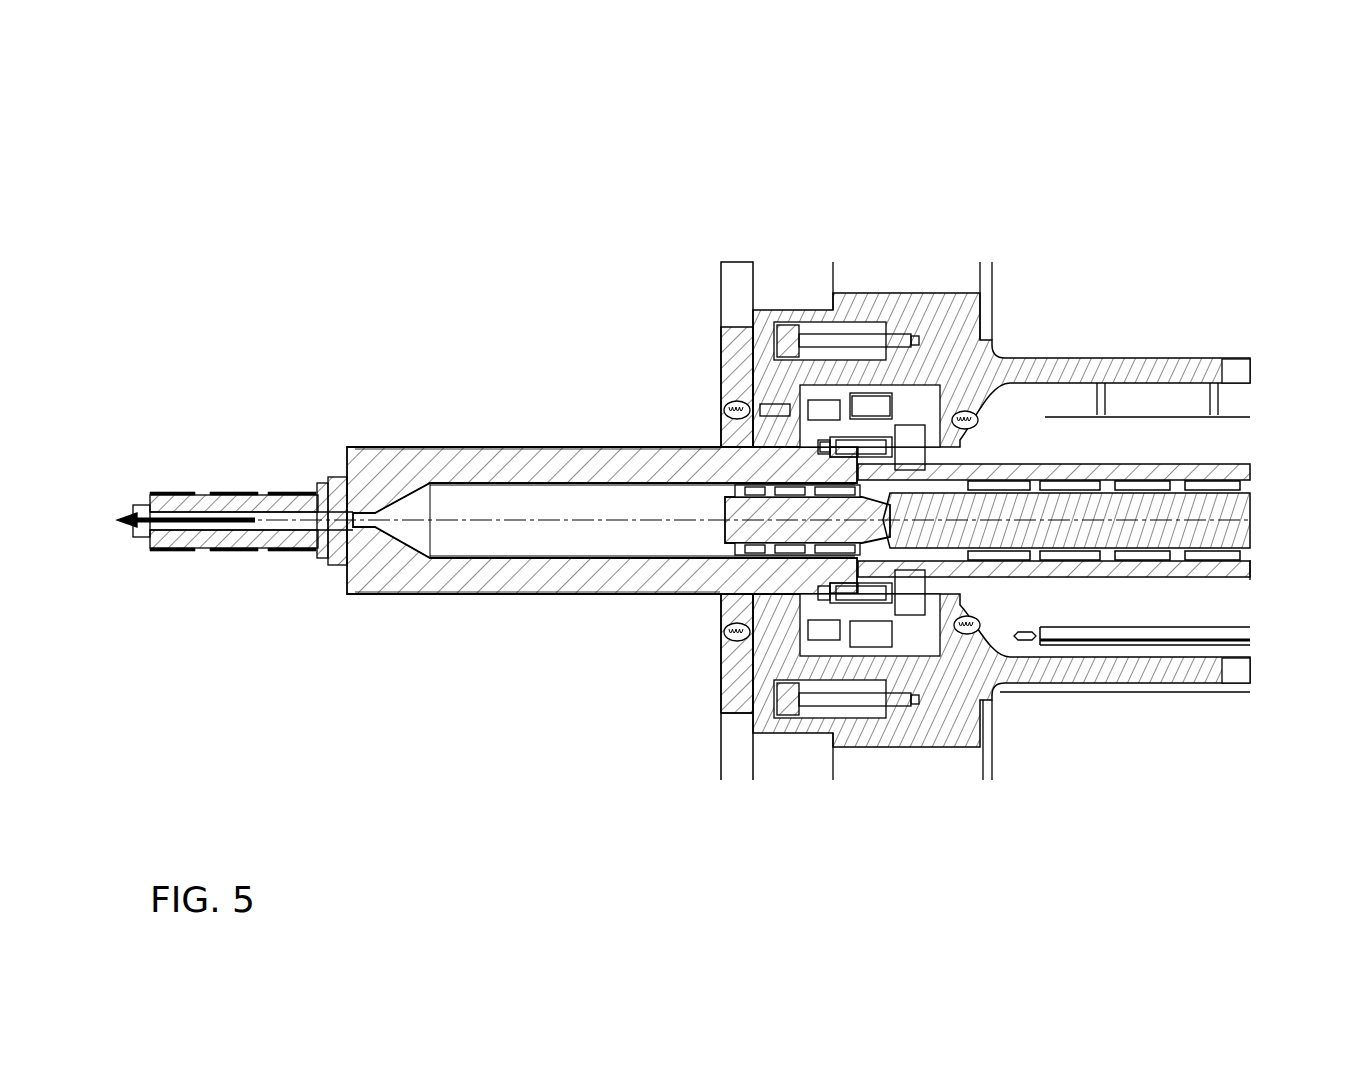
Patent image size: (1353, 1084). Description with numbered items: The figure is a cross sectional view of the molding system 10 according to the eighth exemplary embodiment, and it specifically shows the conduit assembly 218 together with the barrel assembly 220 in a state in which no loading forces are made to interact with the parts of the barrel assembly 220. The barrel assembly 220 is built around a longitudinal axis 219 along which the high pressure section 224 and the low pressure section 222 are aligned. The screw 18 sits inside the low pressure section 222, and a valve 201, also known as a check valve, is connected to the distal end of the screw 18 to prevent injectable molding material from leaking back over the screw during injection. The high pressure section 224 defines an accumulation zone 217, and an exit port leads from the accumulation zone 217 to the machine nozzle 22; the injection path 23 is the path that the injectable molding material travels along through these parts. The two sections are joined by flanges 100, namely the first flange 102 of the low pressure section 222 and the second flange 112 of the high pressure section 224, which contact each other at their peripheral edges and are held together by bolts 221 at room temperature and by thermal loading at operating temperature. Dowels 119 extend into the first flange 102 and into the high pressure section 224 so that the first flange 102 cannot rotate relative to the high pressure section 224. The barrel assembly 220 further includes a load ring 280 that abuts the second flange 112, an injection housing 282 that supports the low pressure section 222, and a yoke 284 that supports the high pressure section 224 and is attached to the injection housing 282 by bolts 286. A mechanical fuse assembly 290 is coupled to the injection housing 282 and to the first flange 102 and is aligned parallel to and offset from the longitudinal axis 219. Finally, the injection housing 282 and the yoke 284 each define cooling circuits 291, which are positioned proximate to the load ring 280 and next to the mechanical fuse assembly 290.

The molding system 10 is at (1126, 141).
The screw 18 is at (1088, 534).
The machine nozzle 22 is at (183, 489).
The injection path 23 is at (125, 528).
The flanges 100 is at (462, 126).
The first flange 102 is at (873, 423).
The second flange 112 is at (821, 418).
The dowels 119 is at (830, 452).
The valve 201 is at (720, 530).
The accumulation zone 217 is at (465, 505).
The conduit assembly 218 is at (1196, 203).
The longitudinal axis 219 is at (540, 520).
The barrel assembly 220 is at (1132, 244).
The bolts 221 is at (900, 455).
The low pressure section 222 is at (1240, 577).
The high pressure section 224 is at (375, 597).
The load ring 280 is at (767, 420).
The injection housing 282 is at (858, 290).
The yoke 284 is at (722, 627).
The bolts 286 is at (873, 330).
The mechanical fuse assembly 290 is at (905, 440).
The cooling circuits 291 is at (737, 400).